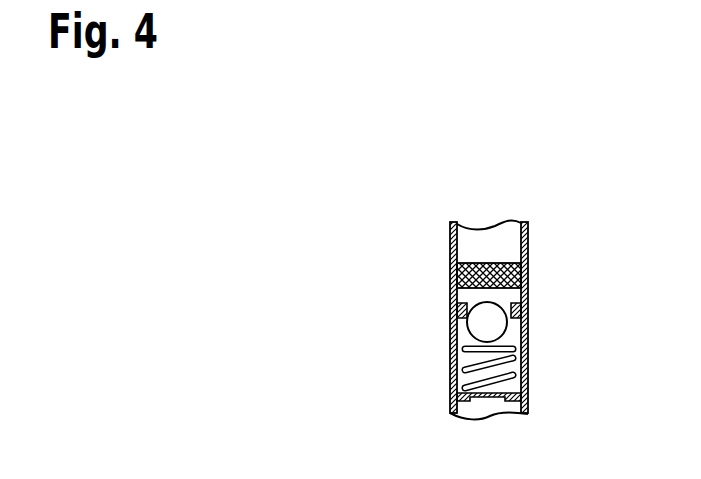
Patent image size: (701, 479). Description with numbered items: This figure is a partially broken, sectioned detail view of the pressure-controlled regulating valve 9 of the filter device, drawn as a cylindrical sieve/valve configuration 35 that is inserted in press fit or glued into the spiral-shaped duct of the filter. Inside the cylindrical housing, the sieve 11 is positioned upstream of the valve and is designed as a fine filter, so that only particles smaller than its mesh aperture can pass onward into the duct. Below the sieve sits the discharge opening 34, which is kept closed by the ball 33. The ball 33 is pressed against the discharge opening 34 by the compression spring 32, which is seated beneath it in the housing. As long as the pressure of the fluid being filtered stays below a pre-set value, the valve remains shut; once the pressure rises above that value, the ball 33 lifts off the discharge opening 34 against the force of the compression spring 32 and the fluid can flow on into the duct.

The cylindrical sieve/valve configuration 35 is at (437, 280).
The sieve 11 is at (528, 270).
The discharge opening 34 is at (504, 305).
The ball 33 is at (528, 333).
The compression spring 32 is at (528, 381).
The regulating valve 9 is at (498, 358).